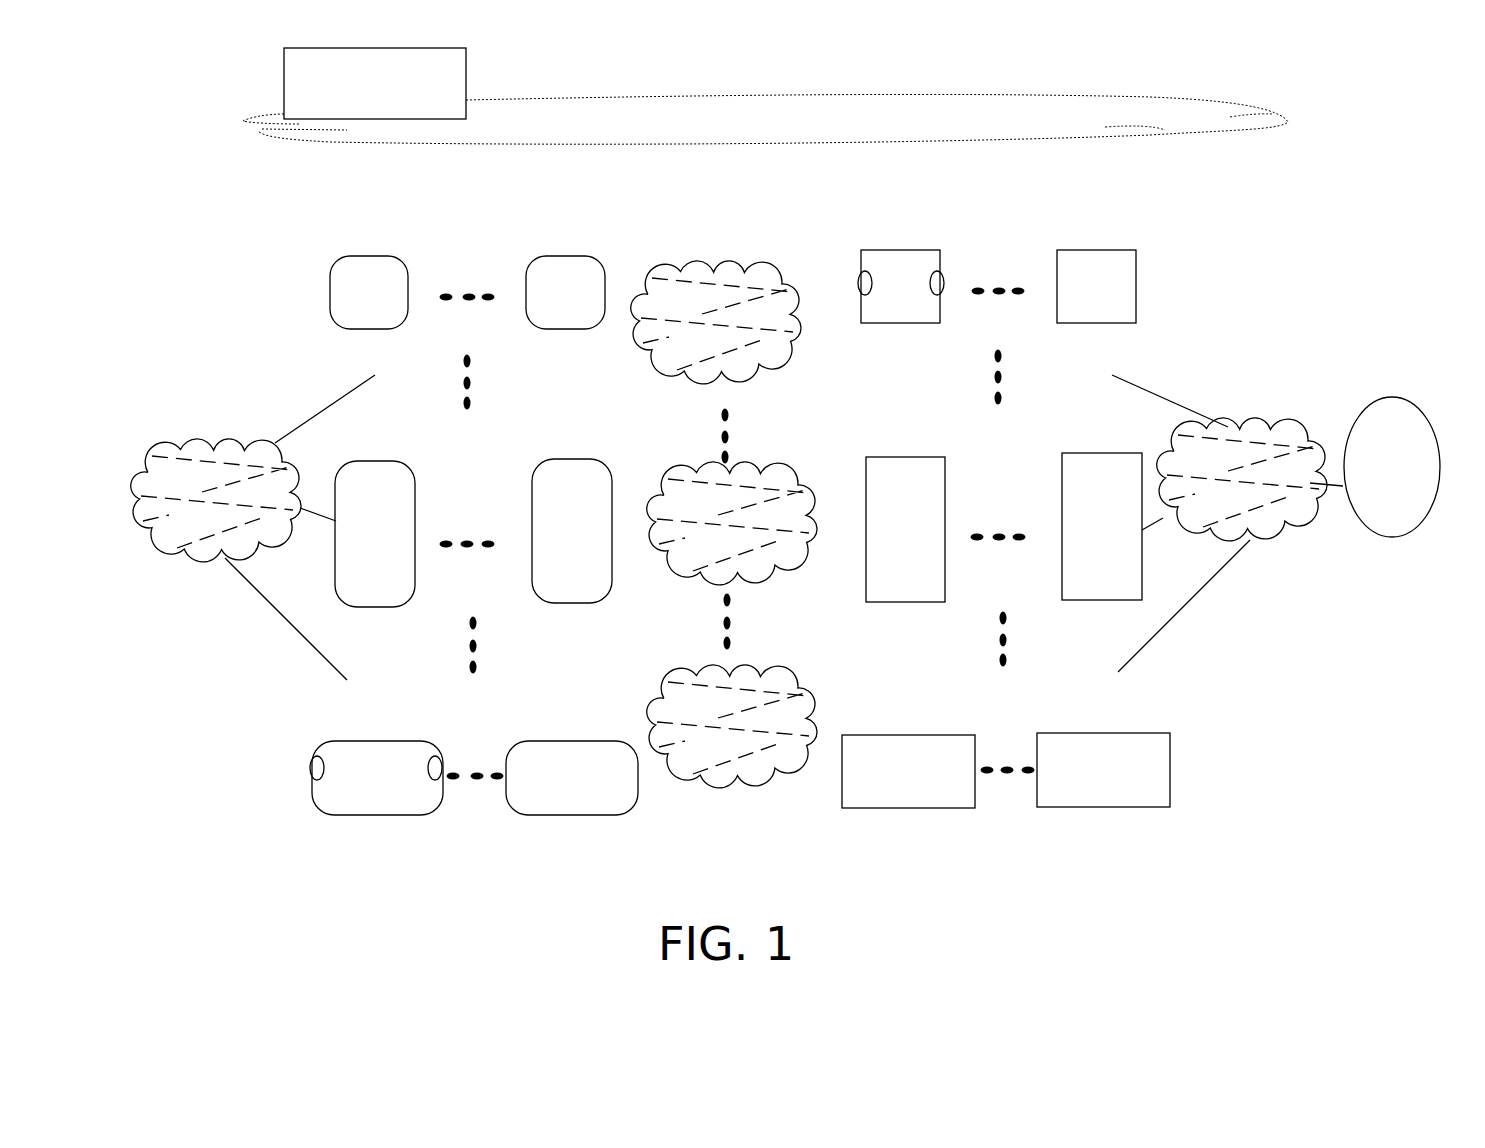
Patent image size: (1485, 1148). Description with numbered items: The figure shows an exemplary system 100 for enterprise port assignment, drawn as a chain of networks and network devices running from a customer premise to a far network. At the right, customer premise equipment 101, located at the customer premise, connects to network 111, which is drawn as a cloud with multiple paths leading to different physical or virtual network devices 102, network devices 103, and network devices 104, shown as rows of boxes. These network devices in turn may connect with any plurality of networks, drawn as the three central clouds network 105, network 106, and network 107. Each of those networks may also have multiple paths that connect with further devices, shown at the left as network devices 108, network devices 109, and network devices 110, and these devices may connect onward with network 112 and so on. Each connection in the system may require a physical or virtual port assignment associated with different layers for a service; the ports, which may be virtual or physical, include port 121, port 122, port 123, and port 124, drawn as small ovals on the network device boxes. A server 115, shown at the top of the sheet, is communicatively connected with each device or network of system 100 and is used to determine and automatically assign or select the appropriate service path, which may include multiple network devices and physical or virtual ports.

The system 100 is at (772, 63).
The server 115 is at (357, 107).
The customer premise equipment 101 is at (1385, 398).
The network devices 102 is at (1000, 272).
The network devices 103 is at (1017, 535).
The network devices 104 is at (1007, 775).
The network 105 is at (735, 262).
The network 106 is at (770, 470).
The network 107 is at (713, 785).
The network devices 108 is at (469, 293).
The network devices 109 is at (467, 540).
The network devices 110 is at (480, 780).
The network 111 is at (1302, 420).
The network 112 is at (200, 448).
The port 121 is at (948, 285).
The port 122 is at (858, 280).
The port 123 is at (441, 765).
The port 124 is at (310, 768).